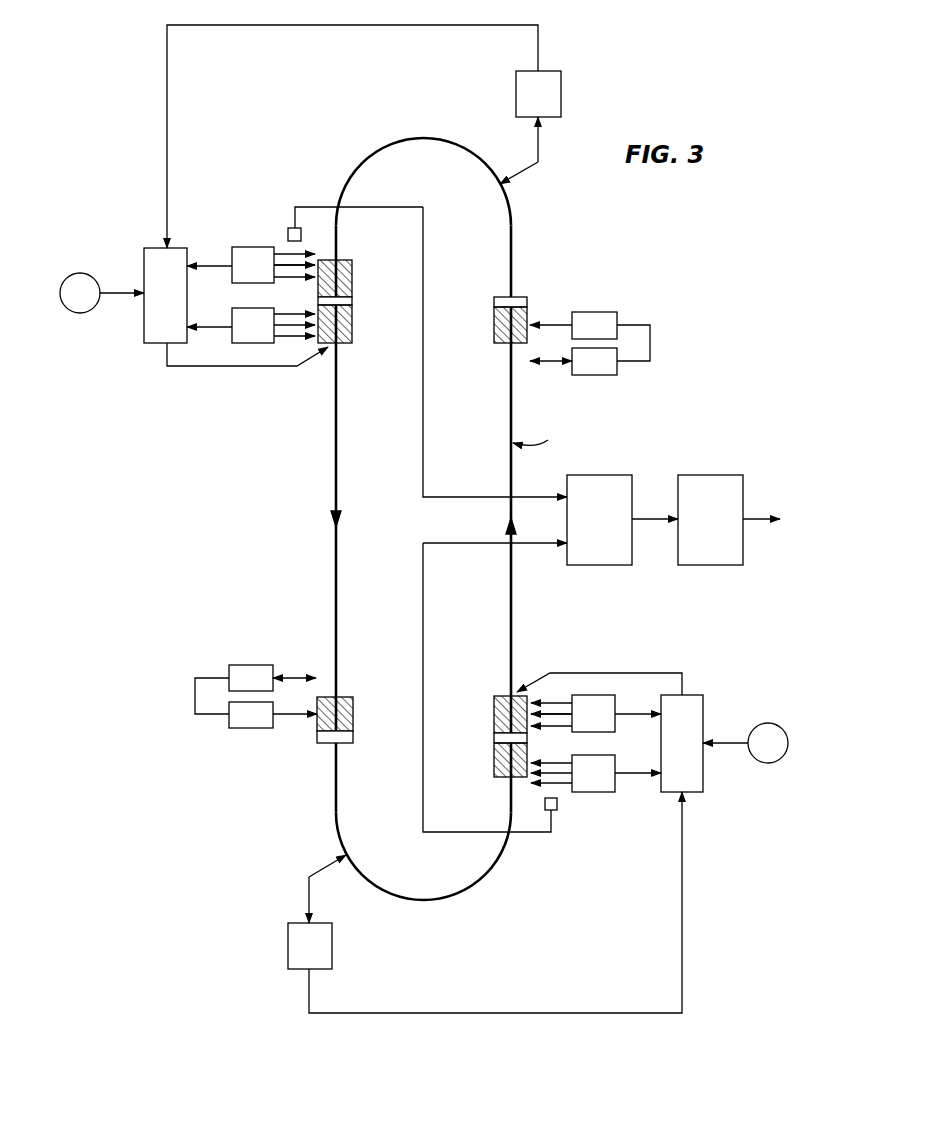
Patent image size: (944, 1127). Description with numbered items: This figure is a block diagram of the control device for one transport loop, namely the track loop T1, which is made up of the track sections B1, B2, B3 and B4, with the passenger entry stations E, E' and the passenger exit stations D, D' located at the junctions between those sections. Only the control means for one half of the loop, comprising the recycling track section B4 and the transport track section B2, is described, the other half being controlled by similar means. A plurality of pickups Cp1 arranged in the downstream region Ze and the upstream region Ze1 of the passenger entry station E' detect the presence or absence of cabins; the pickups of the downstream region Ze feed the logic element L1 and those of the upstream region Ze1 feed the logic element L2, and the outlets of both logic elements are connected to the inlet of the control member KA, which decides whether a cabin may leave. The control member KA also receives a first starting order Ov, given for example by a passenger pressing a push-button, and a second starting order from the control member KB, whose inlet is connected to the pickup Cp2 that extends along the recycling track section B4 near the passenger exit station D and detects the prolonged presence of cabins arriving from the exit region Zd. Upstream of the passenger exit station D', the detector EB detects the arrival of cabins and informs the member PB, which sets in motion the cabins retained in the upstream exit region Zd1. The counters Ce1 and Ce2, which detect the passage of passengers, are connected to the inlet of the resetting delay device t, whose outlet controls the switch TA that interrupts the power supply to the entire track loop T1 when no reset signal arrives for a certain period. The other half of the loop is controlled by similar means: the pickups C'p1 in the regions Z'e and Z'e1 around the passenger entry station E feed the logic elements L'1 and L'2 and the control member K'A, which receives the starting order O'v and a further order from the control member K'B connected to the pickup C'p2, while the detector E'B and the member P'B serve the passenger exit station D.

The track section B1 is at (512, 596).
The transport track section B2 is at (336, 595).
The track section B3 is at (428, 900).
The recycling track section B4 is at (414, 138).
The control member KA is at (341, 195).
The first starting order Ov is at (102, 293).
The logic element L1 is at (251, 327).
The logic element L2 is at (251, 266).
The upstream region Ze1 is at (353, 269).
The passenger entry station E' is at (357, 307).
The downstream region Ze is at (353, 336).
The pickups Cp1 is at (290, 270).
The counter Ce2 is at (288, 234).
The control member KB is at (538, 94).
The pickup Cp2 is at (522, 171).
The passenger exit station D is at (490, 298).
The passenger exit region Zd is at (497, 332).
The pump P'B is at (590, 318).
The receiver E'B is at (573, 383).
The track loop T1 is at (545, 445).
The resetting delay device t is at (622, 520).
The switch TA is at (729, 520).
The detector EB is at (241, 668).
The control member PB is at (253, 729).
The upstream region Zd1 is at (353, 713).
The passenger exit station D' is at (355, 742).
The cell Z'e is at (481, 704).
The passenger entry station E is at (485, 740).
The cell Z'e1 is at (480, 769).
The connection C'p1 is at (562, 697).
The light source L'1 is at (596, 715).
The light source L'2 is at (596, 775).
The control unit K'A is at (506, 843).
The setpoint source O'v is at (745, 743).
The counter Ce1 is at (557, 806).
The connection C'p2 is at (314, 875).
The control unit K'B is at (310, 946).